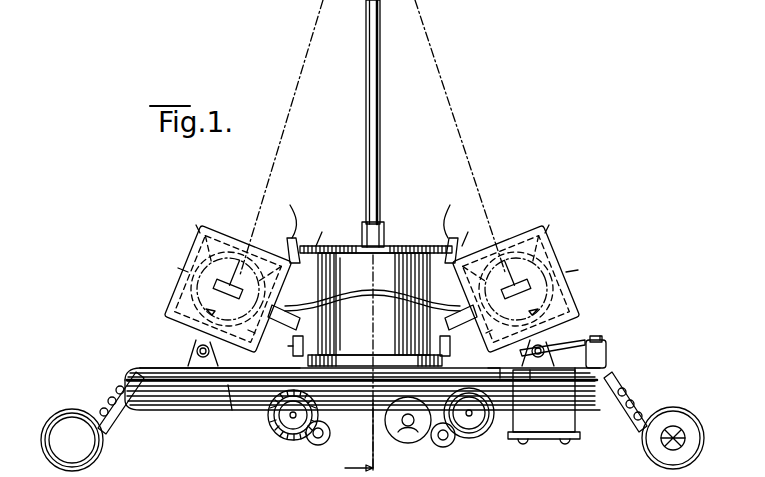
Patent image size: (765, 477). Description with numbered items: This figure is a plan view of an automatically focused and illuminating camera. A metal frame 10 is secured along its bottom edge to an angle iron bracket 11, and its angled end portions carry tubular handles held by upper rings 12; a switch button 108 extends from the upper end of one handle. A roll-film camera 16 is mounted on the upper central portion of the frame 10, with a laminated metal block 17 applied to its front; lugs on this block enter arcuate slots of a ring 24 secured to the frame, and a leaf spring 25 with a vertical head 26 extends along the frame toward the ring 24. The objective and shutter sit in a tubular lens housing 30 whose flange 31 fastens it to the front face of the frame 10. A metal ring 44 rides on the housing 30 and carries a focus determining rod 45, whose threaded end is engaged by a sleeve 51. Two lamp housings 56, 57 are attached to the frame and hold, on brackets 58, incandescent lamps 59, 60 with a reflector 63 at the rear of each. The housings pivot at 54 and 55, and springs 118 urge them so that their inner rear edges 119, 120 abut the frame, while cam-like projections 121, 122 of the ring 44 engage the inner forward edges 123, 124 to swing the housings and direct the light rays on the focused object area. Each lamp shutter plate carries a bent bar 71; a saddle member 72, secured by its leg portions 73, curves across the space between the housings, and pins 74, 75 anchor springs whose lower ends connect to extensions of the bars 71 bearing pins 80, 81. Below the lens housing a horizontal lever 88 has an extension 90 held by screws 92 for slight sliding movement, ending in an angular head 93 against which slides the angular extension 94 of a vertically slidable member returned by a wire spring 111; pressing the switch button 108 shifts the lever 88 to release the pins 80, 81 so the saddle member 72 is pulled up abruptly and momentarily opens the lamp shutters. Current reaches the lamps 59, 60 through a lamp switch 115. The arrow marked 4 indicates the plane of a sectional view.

The section line 4 is at (351, 468).
The frame 10 is at (142, 368).
The angle iron bracket 11 is at (196, 402).
The upper rings 12 is at (42, 432).
The camera 16 is at (381, 440).
The laminated block of metal 17 is at (330, 428).
The ring 24 is at (307, 412).
The leaf spring 25 is at (443, 423).
The head 26 is at (408, 419).
The tubular housing 30 is at (374, 304).
The flange 31 is at (392, 355).
The metal ring 44 is at (402, 246).
The focus determining rod 45 is at (380, 97).
The sleeve 51 is at (381, 232).
The pivot 54 is at (232, 410).
The pivot 55 is at (535, 368).
The lamp housing 56 is at (186, 250).
The lamp housing 57 is at (560, 252).
The brackets 58 is at (200, 230).
The incandescent lamp 59 is at (186, 270).
The incandescent lamp 60 is at (578, 270).
The reflector 63 is at (178, 302).
The bent bar 71 is at (286, 306).
The saddle member 72 is at (350, 304).
The leg portions 73 is at (290, 240).
The pin 74 is at (249, 324).
The pin 75 is at (489, 324).
The pin 80 is at (293, 346).
The pin 81 is at (450, 346).
The lever 88 is at (312, 333).
The lever extension 90 is at (500, 378).
The screws 92 is at (578, 370).
The operative head 93 is at (600, 338).
The extension 94 is at (606, 352).
The switch button 108 is at (685, 442).
The wire spring 111 is at (575, 342).
The lamp switch 115 is at (544, 407).
The springs 118 is at (190, 350).
The inner rear edge 119 is at (270, 430).
The inner rear edge 120 is at (475, 395).
The cam-like lateral projection 121 is at (289, 213).
The cam-like lateral projection 122 is at (437, 211).
The inner forward edge 123 is at (327, 229).
The inner forward edge 124 is at (465, 220).